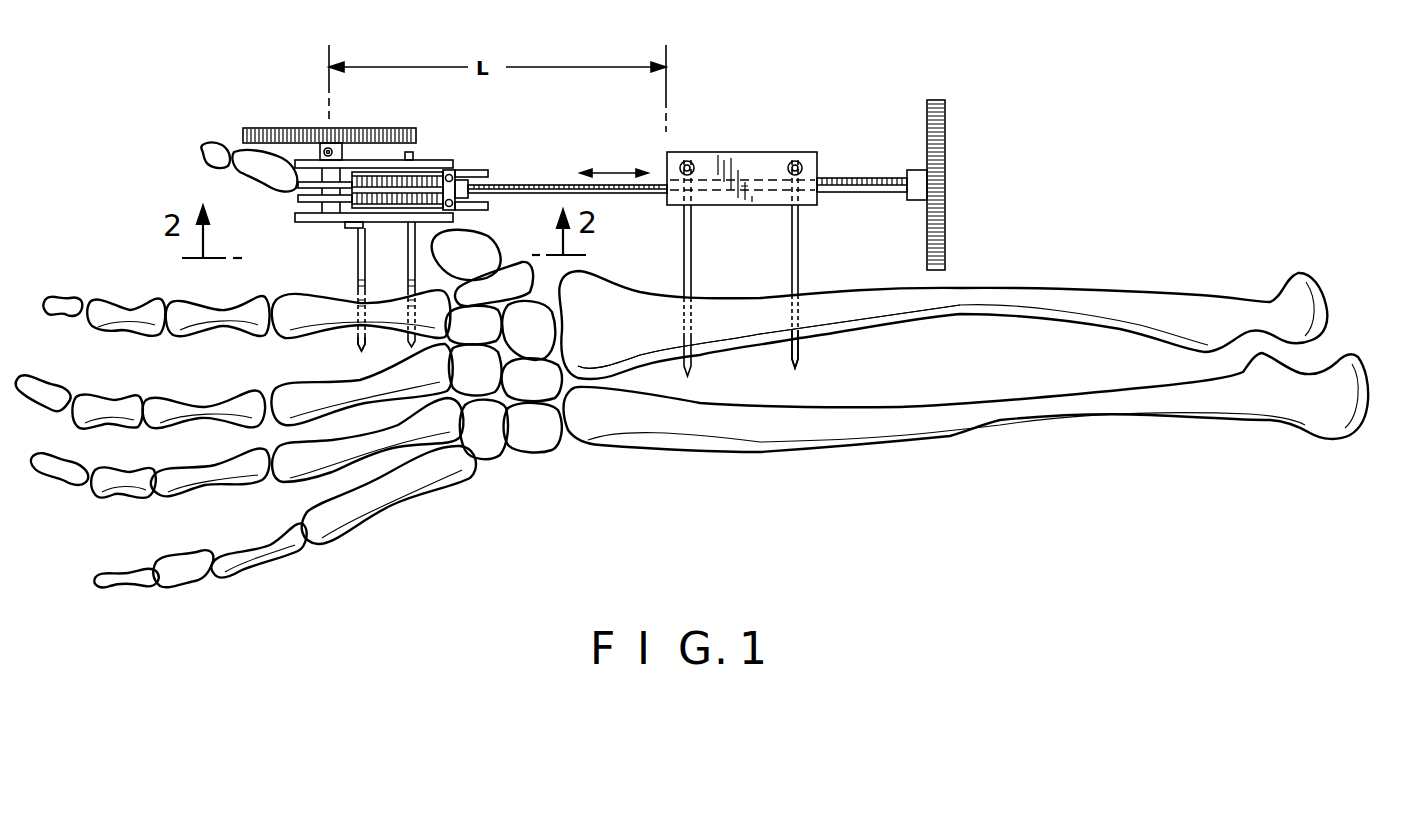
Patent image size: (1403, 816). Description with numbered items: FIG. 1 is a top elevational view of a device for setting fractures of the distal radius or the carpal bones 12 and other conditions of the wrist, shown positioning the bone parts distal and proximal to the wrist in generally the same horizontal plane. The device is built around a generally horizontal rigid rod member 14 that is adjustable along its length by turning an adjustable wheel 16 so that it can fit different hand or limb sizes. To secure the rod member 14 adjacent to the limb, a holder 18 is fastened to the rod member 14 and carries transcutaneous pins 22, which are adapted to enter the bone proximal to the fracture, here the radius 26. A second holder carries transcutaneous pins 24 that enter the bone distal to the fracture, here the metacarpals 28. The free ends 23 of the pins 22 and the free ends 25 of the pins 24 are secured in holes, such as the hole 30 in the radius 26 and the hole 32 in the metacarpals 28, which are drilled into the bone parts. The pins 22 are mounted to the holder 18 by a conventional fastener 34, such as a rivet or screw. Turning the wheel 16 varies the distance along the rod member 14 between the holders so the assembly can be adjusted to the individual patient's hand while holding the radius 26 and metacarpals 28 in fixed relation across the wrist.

The carpal bones 12 is at (523, 455).
The rigid rod member 14 is at (549, 182).
The adjustable wheel 16 is at (946, 181).
The holder 18 is at (732, 152).
The transcutaneous pins 22 is at (800, 258).
The free ends 23 is at (800, 362).
The transcutaneous pins 24 is at (357, 255).
The free ends 25 is at (366, 342).
The radius 26 is at (1037, 283).
The metacarpals 28 is at (427, 473).
The hole 30 is at (810, 312).
The hole 32 is at (348, 318).
The fastener 34 is at (798, 163).